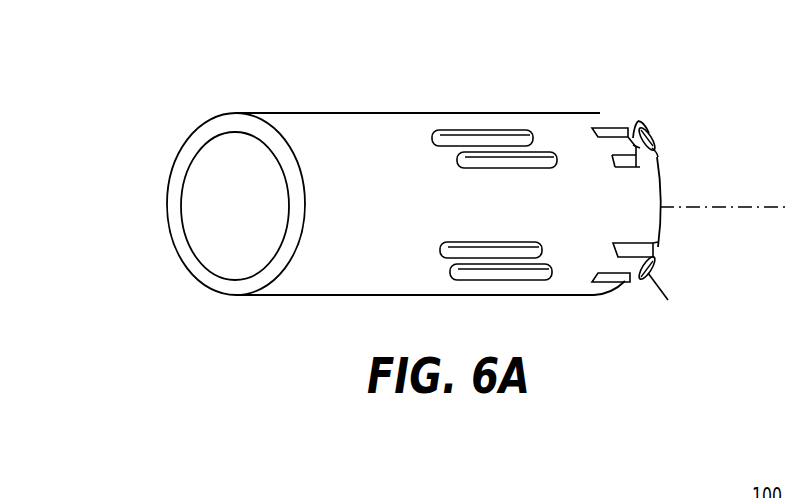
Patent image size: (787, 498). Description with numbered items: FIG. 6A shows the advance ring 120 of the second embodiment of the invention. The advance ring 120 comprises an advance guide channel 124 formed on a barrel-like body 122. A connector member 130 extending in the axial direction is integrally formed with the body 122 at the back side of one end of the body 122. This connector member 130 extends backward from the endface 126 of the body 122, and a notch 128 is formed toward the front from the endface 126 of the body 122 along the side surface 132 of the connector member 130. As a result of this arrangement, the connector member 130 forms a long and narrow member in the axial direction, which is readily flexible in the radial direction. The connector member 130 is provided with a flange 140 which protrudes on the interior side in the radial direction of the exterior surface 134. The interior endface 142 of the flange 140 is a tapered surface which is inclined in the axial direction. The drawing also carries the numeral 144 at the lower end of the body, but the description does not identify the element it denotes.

The advance ring 120 is at (520, 112).
The barrel-like body 122 is at (303, 112).
The advance guide channel 124 is at (483, 135).
The endface 126 is at (660, 215).
The notch 128 is at (607, 135).
The connector member 130 is at (615, 145).
The side surface 132 is at (637, 120).
The exterior surface 134 is at (632, 167).
The flange 140 is at (660, 165).
The interior endface 142 is at (655, 140).
The lower end tab 144 is at (642, 269).